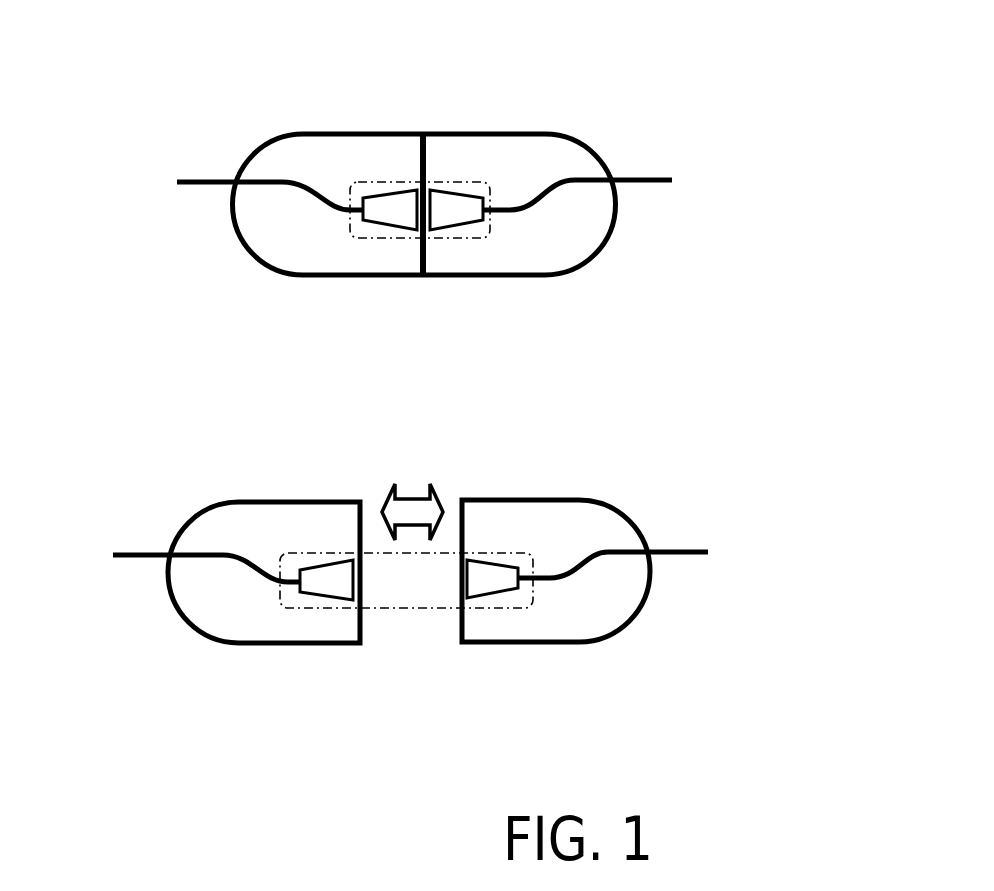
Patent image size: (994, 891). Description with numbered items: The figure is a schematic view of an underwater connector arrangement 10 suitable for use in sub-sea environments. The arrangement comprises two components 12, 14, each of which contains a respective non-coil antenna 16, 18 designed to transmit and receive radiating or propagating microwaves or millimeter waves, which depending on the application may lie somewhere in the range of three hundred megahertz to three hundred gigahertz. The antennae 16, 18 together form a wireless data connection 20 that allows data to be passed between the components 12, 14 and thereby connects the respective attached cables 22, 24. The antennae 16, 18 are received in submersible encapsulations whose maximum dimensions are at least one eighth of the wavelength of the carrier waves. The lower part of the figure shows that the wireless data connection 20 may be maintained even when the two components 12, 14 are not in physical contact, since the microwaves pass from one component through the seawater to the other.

The underwater connector arrangement 10 is at (165, 149).
The component 12 is at (290, 158).
The component 14 is at (573, 158).
The non-coil antenna 16 is at (390, 205).
The non-coil antenna 18 is at (455, 205).
The wireless data connection 20 is at (367, 238).
The cable 22 is at (145, 561).
The cable 24 is at (678, 555).